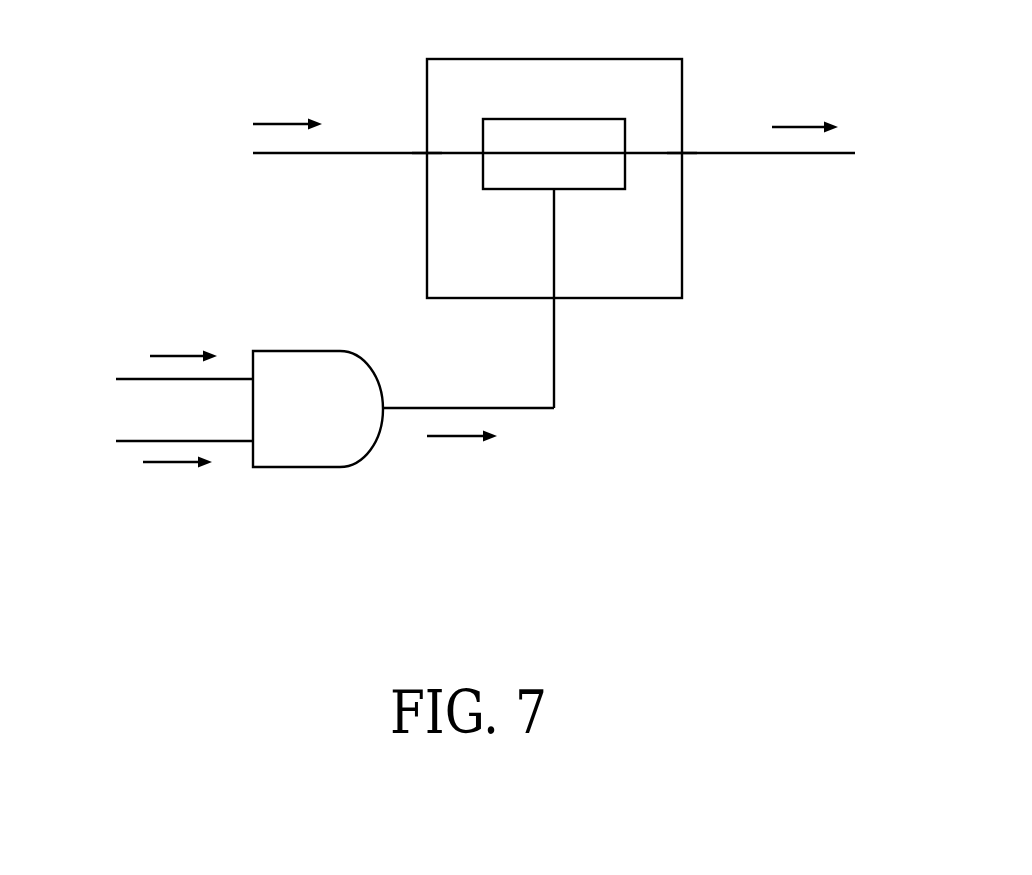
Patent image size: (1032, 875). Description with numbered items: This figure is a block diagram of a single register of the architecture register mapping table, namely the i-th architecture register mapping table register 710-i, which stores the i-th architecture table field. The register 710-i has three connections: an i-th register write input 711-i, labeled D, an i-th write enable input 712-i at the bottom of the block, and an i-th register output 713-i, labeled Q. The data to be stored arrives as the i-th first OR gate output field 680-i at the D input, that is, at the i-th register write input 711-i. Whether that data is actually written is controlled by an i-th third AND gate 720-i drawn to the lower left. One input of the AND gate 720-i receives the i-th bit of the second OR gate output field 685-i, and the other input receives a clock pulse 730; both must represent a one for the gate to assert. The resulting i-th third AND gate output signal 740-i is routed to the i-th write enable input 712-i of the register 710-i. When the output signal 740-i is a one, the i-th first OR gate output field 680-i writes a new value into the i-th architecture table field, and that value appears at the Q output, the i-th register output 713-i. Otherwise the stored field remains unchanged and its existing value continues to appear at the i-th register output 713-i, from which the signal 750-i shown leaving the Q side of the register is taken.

The i-th first OR gate output field 680-i is at (290, 122).
The i-th bit of the second OR gate output field 685-i is at (187, 352).
The clock pulse 730 is at (180, 466).
The i-th third AND gate 720-i is at (285, 467).
The i-th third AND gate output signal 740-i is at (448, 438).
The i-th architecture register mapping table register 710-i is at (655, 285).
The i-th register write input 711-i is at (425, 153).
The i-th write enable input 712-i is at (554, 300).
The i-th register output 713-i is at (681, 158).
The output signal 750-i is at (790, 125).